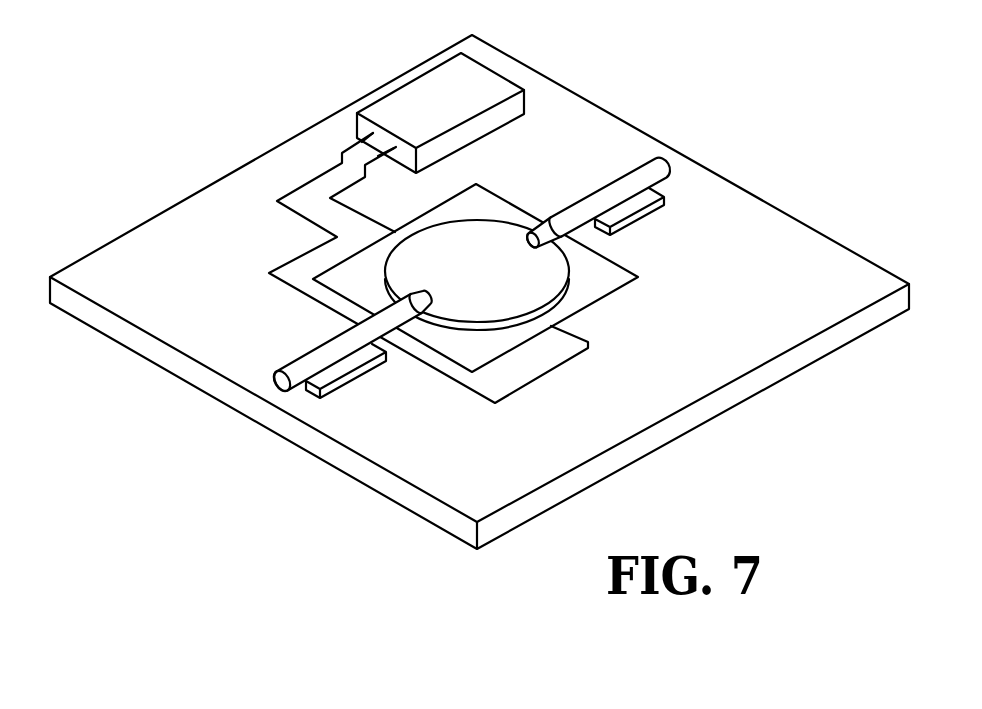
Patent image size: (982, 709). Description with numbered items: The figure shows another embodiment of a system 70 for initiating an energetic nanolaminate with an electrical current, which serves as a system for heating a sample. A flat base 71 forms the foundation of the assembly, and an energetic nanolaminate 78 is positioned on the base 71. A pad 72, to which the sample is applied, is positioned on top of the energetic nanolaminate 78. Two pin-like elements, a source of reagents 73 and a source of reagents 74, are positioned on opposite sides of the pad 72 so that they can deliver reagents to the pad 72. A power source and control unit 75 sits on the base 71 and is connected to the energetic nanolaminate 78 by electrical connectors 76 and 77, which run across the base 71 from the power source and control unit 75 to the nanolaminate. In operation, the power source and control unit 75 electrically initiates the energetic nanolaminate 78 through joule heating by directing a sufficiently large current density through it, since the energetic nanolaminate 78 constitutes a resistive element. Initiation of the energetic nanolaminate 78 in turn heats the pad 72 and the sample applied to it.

The system 70 is at (479, 292).
The base 71 is at (197, 300).
The pad 72 is at (498, 290).
The source of reagents 73 is at (595, 202).
The source of reagents 74 is at (322, 360).
The power source and control unit 75 is at (452, 112).
The electrical connector 76 is at (300, 217).
The electrical connector 77 is at (367, 215).
The energetic nanolaminate 78 is at (626, 262).